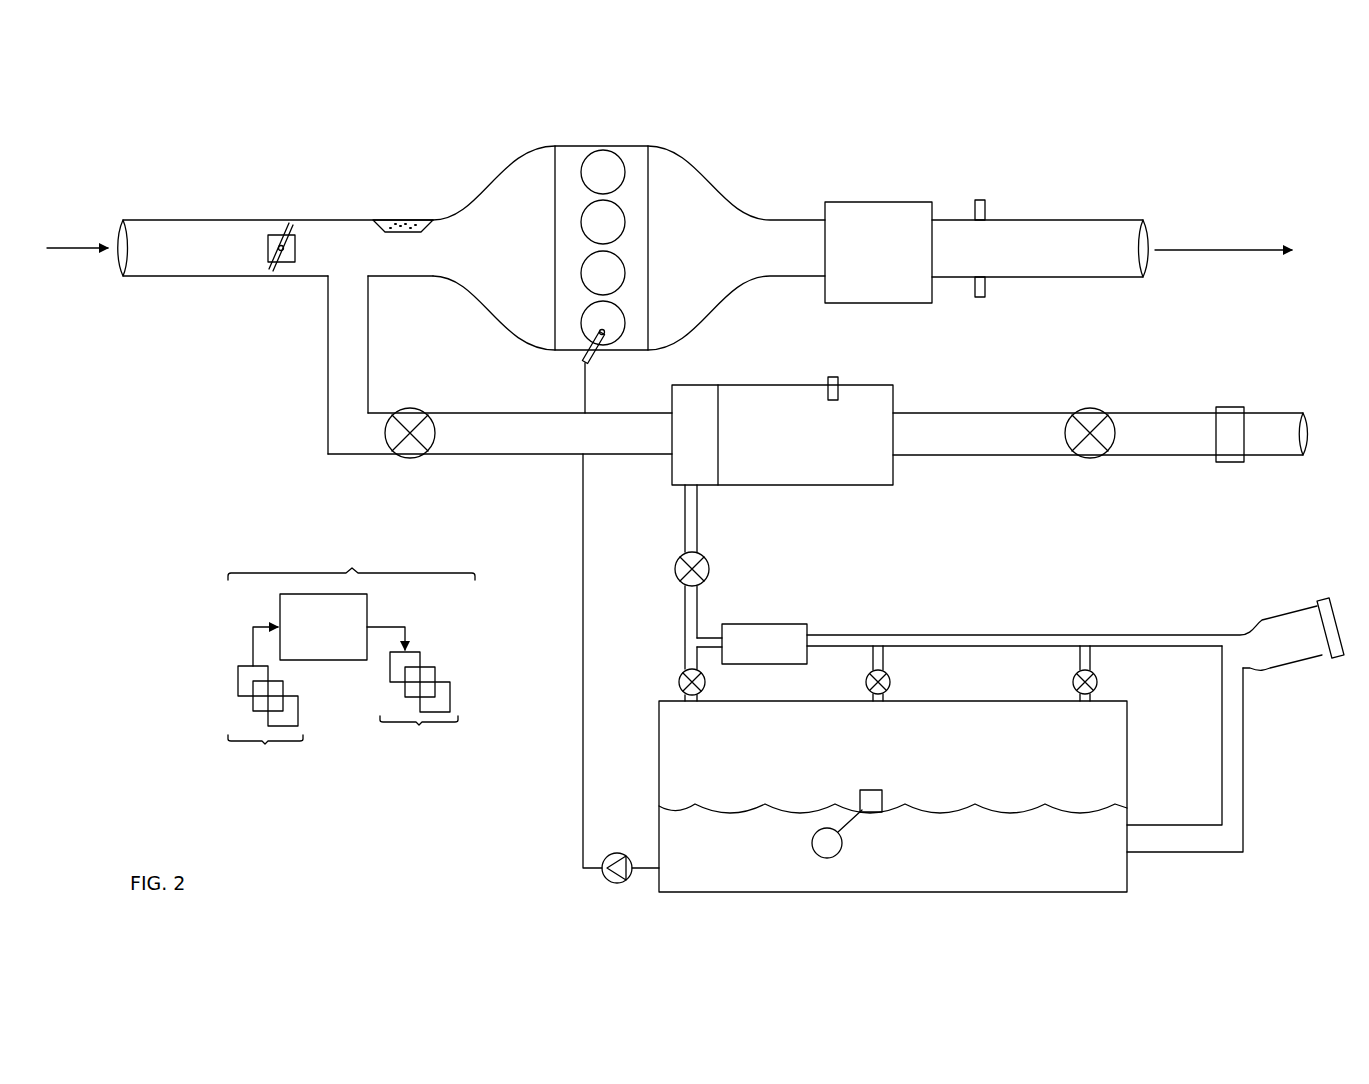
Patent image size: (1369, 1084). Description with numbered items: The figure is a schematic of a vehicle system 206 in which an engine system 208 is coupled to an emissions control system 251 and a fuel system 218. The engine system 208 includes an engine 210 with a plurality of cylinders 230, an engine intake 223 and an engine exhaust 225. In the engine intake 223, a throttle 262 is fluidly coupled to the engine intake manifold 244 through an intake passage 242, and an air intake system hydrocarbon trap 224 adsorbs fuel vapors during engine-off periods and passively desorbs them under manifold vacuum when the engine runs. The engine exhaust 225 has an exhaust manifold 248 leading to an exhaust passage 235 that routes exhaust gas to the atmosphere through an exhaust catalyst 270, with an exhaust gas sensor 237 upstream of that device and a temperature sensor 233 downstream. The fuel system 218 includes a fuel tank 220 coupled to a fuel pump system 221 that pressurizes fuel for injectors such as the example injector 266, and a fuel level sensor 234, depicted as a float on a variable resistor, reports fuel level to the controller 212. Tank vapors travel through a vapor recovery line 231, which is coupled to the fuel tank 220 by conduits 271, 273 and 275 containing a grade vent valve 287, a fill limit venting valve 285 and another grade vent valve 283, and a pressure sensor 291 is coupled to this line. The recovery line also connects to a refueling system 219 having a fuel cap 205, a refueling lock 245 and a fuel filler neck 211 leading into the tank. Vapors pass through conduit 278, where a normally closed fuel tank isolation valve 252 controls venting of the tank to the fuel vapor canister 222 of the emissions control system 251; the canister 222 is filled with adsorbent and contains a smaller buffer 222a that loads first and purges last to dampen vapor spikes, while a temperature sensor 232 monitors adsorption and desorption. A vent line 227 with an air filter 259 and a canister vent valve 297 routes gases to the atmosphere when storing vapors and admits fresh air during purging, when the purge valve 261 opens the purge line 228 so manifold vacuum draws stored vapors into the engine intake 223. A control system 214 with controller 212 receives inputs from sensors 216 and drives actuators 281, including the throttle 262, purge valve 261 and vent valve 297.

The vehicle system 206 is at (136, 150).
The engine intake 223 is at (332, 152).
The air intake system hydrocarbon trap 224 is at (408, 220).
The throttle 262 is at (294, 258).
The intake passage 242 is at (326, 282).
The engine intake manifold 244 is at (494, 248).
The engine 210 is at (648, 232).
The cylinders 230 is at (620, 164).
The exhaust manifold 248 is at (736, 248).
The injector 266 is at (593, 350).
The engine exhaust 225 is at (832, 128).
The engine system 208 is at (944, 144).
The exhaust catalyst 270 is at (858, 202).
The exhaust gas sensor 237 is at (974, 212).
The temperature sensor 233 is at (974, 286).
The exhaust passage 235 is at (1092, 220).
The purge line 228 is at (500, 433).
The canister purge valve 261 is at (405, 412).
The fuel vapor canister 222 is at (892, 410).
The buffer 222a is at (692, 386).
The temperature sensor 232 is at (832, 377).
The vent line 227 is at (1100, 434).
The canister vent valve 297 is at (1090, 410).
The air filter 259 is at (1234, 407).
The emissions control system 251 is at (1290, 366).
The conduit 278 is at (686, 518).
The fuel tank isolation valve 252 is at (682, 582).
The grade vent valve 287 is at (680, 680).
The conduit 271 is at (699, 658).
The pressure sensor 291 is at (808, 634).
The conduit 273 is at (878, 660).
The fill limit venting valve 285 is at (890, 682).
The conduit 275 is at (1084, 660).
The grade vent valve 283 is at (1097, 682).
The vapor recovery line 231 is at (1146, 632).
The fuel cap 205 is at (1328, 598).
The refueling system 219 is at (1294, 594).
The fuel filler neck 211 is at (1243, 744).
The refueling lock 245 is at (1325, 657).
The fuel tank 220 is at (1127, 806).
The fuel level sensor 234 is at (872, 790).
The fuel system 218 is at (1262, 816).
The fuel pump system 221 is at (612, 862).
The control system 214 is at (351, 550).
The controller 212 is at (323, 627).
The sensors 216 is at (270, 708).
The actuators 281 is at (420, 700).